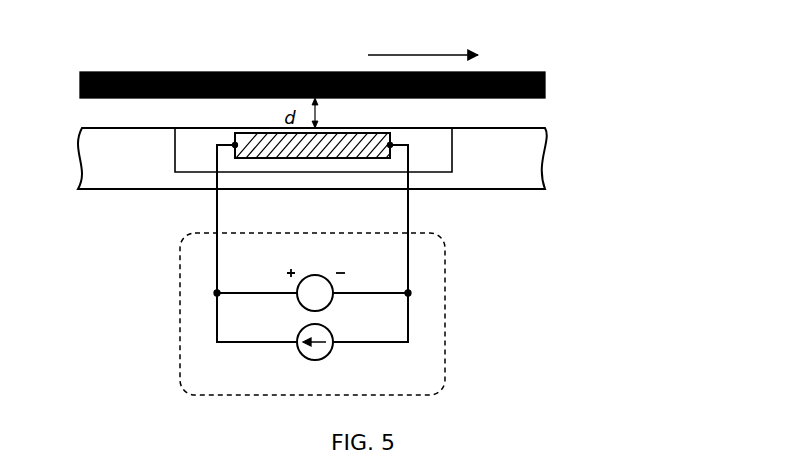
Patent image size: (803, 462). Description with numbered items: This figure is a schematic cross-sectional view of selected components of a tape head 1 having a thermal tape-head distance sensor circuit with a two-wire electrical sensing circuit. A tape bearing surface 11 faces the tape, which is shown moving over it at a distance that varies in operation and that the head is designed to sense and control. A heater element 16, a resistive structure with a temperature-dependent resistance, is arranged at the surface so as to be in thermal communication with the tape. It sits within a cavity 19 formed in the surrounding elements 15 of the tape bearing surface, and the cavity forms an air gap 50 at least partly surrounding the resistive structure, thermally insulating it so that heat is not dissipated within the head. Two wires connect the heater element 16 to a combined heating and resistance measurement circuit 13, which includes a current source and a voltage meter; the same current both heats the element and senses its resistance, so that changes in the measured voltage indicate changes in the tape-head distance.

The tape head 1 is at (606, 261).
The tape bearing surface 11 is at (528, 123).
The combined heating and resistance measurement circuit 13 is at (178, 352).
The surrounding elements of the tape bearing surface 15 is at (505, 143).
The heater element 16 is at (365, 128).
The cavity 19 is at (175, 163).
The air gap 50 is at (309, 172).